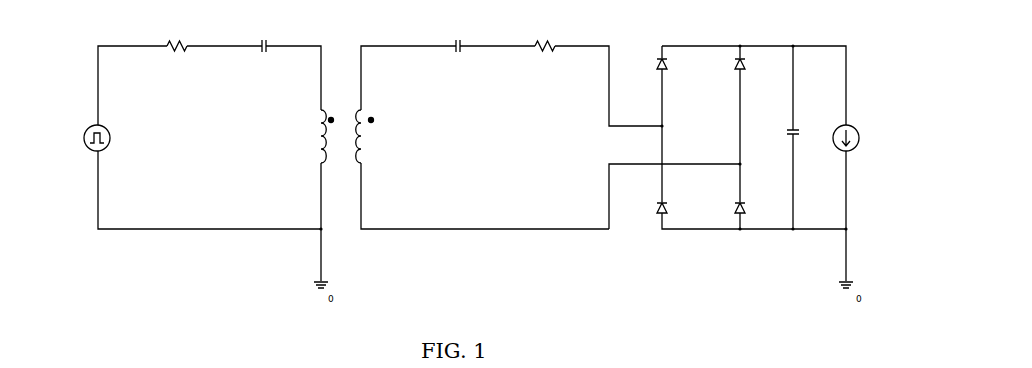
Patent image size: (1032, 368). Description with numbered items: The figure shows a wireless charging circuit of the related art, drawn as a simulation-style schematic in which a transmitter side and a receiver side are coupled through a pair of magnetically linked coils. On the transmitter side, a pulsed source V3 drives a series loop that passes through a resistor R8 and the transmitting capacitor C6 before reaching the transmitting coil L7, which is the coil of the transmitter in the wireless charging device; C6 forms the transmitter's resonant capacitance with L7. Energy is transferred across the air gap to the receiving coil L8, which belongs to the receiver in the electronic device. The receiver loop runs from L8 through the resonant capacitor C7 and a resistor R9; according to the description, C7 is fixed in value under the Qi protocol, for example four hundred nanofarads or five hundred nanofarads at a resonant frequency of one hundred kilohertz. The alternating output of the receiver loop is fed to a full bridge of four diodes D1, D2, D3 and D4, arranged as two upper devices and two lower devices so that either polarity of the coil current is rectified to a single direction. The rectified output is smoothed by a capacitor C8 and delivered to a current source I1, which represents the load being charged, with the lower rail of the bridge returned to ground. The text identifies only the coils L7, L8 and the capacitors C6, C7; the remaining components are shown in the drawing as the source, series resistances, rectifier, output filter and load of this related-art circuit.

The pulse voltage source V3 is at (66, 159).
The resistor R8 is at (177, 45).
The transmitting capacitor C6 is at (264, 45).
The transmitting coil L7 is at (302, 136).
The receiving coil L8 is at (392, 136).
The resonant capacitor C7 is at (462, 45).
The resistor R9 is at (545, 45).
The rectifier diode D1 is at (671, 82).
The rectifier diode D2 is at (749, 82).
The rectifier diode D3 is at (671, 225).
The rectifier diode D4 is at (749, 225).
The output capacitor C8 is at (808, 139).
The current source load I1 is at (855, 133).